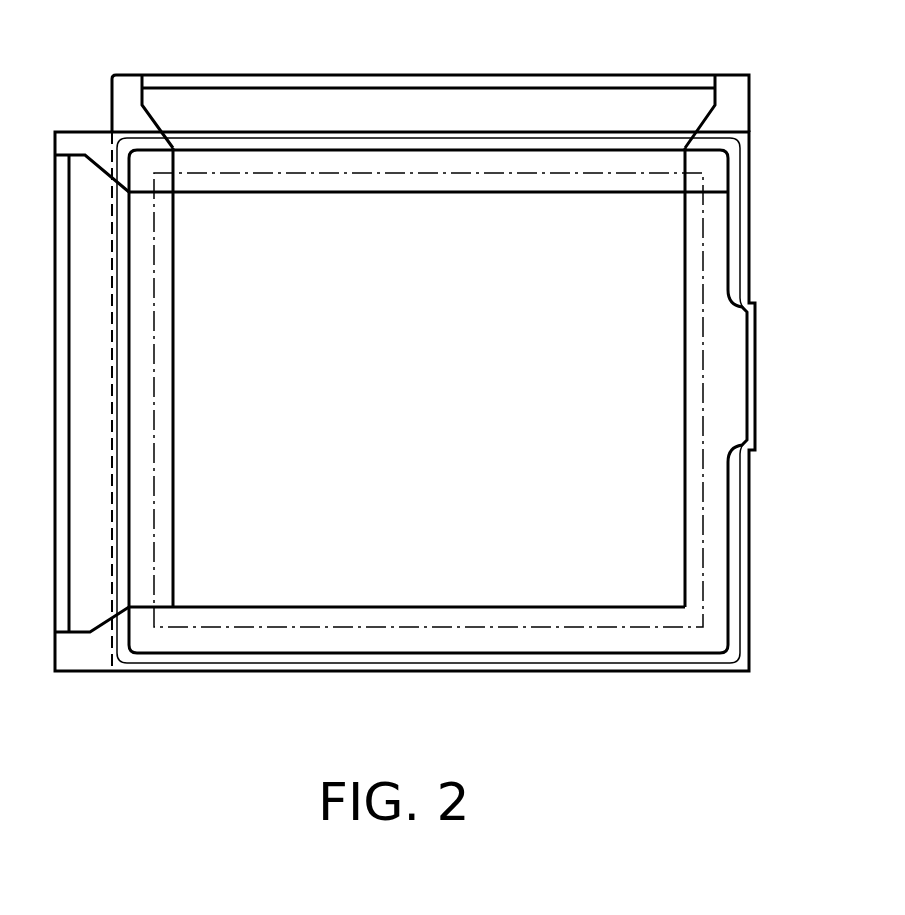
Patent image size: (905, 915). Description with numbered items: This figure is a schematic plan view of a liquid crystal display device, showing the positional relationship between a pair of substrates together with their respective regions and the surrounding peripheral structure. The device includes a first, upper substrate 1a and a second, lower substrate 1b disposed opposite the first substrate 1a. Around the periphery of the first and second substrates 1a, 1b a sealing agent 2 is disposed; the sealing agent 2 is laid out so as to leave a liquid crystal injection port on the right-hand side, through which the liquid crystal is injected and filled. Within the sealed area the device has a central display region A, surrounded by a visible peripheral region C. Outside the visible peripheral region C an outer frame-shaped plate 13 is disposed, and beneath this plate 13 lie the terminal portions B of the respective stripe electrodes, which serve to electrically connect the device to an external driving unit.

The first (upper) substrate 1a is at (80, 137).
The second (lower) substrate 1b is at (128, 88).
The sealing agent 2 is at (735, 267).
The outer frame-shaped plate 13 is at (778, 177).
The display region A is at (340, 535).
The terminal portions B is at (468, 82).
The visible peripheral region C is at (533, 187).